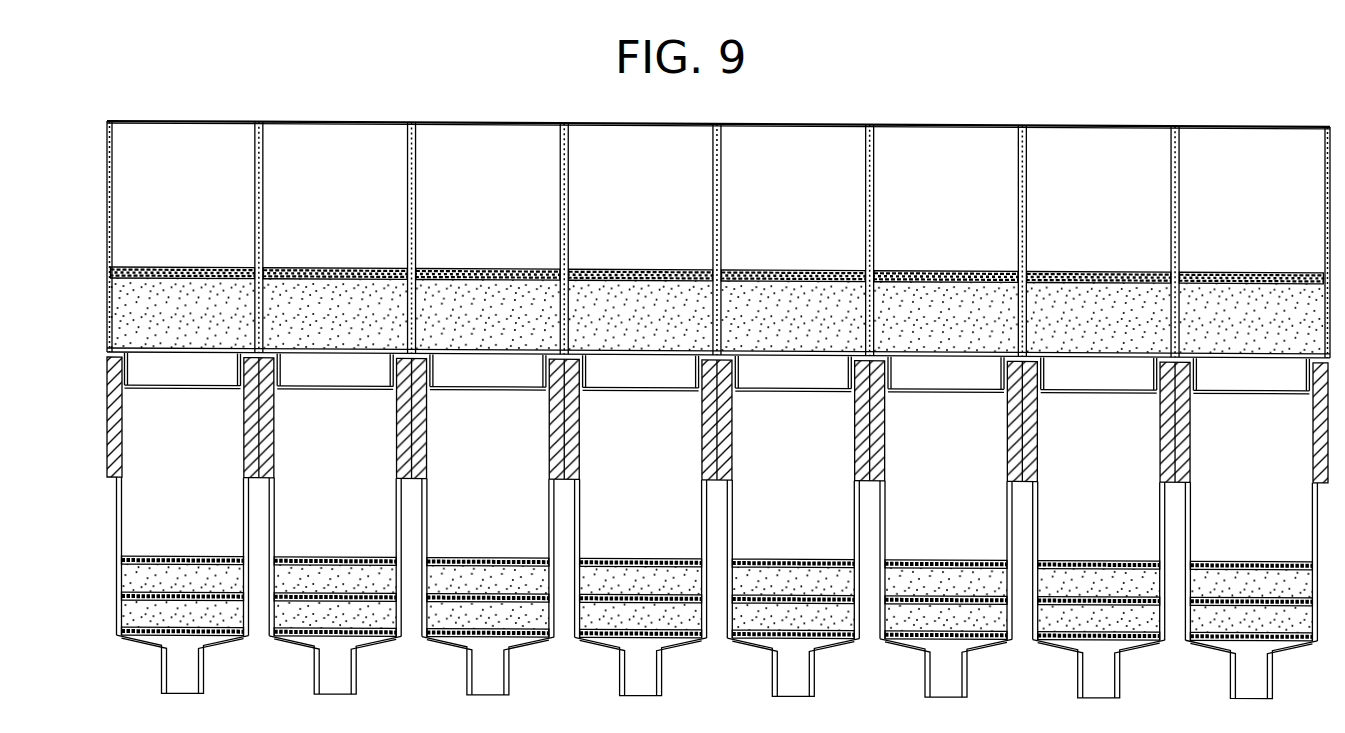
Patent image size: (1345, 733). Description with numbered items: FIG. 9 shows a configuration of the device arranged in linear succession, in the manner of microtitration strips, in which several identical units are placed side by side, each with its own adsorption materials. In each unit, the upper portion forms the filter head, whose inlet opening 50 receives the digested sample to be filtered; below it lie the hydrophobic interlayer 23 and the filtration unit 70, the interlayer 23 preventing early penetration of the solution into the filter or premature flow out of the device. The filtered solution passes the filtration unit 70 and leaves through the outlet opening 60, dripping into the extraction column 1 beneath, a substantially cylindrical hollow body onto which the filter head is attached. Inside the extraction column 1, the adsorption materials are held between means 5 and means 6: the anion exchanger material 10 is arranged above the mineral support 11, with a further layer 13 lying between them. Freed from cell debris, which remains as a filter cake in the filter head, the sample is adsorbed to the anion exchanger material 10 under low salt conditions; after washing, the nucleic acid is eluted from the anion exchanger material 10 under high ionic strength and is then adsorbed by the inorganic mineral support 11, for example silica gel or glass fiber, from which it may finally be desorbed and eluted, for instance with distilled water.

The inlet opening 50 is at (180, 135).
The hydrophobic interlayer 23 is at (112, 273).
The filtration unit 70 is at (118, 314).
The outlet opening 60 is at (140, 370).
The extraction column 1 is at (113, 423).
The means 5 is at (121, 559).
The anion exchanger material 10 is at (127, 574).
The middle frit 13 is at (127, 593).
The mineral support 11 is at (127, 610).
The means 6 is at (121, 628).